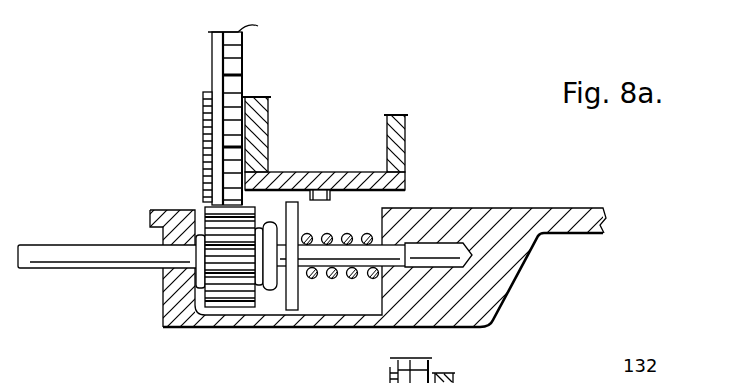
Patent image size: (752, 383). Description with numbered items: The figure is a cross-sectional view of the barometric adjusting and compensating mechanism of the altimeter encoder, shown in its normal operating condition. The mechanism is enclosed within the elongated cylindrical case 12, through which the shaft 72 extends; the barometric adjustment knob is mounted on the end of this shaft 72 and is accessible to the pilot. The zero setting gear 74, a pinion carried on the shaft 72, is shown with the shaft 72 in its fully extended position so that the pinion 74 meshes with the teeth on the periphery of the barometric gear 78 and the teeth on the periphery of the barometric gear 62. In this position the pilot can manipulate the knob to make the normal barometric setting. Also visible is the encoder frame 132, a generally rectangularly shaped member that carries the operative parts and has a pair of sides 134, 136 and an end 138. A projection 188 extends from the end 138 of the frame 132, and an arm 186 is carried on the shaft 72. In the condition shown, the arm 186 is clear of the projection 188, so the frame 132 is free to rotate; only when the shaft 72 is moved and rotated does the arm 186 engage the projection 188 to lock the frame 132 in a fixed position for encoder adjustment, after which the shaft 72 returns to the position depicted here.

The case 12 is at (526, 199).
The barometric gear 62 is at (243, 70).
The shaft 72 is at (98, 270).
The zero setting gear 74 is at (228, 298).
The barometric gear 78 is at (203, 108).
The frame 132 is at (359, 137).
The side 134 is at (405, 165).
The side 136 is at (268, 108).
The end 138 is at (312, 170).
The arm 186 is at (302, 298).
The projection 188 is at (327, 198).